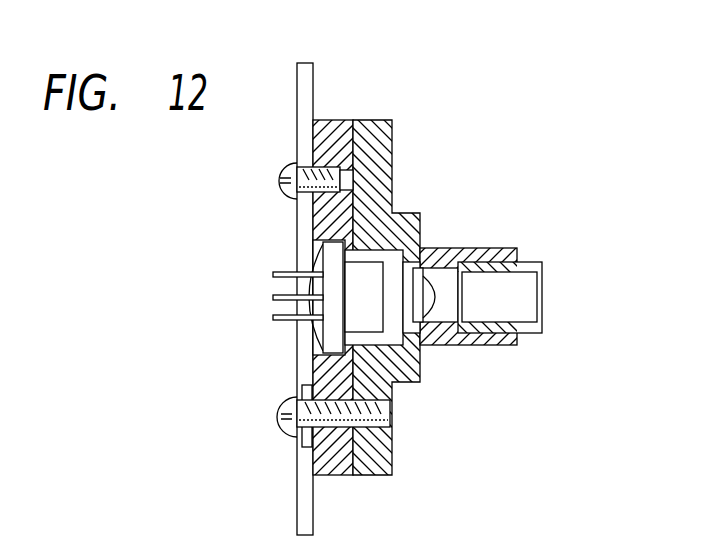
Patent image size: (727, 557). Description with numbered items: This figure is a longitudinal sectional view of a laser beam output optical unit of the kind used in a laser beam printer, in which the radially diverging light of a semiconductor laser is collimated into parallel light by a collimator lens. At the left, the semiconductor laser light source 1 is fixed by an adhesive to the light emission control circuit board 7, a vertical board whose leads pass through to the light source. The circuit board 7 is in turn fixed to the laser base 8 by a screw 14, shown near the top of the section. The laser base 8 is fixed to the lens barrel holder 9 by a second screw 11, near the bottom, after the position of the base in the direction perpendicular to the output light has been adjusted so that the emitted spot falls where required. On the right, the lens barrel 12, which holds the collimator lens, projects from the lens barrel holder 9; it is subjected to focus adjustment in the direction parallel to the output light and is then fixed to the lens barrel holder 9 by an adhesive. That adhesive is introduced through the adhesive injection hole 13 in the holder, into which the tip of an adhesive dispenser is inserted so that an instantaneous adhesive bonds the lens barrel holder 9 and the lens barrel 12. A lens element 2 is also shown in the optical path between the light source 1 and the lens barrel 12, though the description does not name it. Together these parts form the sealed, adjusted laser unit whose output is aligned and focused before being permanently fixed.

The semiconductor laser light source 1 is at (367, 292).
The lens 2 is at (421, 273).
The light emission control circuit board 7 is at (304, 68).
The laser base 8 is at (334, 122).
The lens barrel holder 9 is at (370, 122).
The screw 11 is at (345, 420).
The lens barrel 12 is at (527, 333).
The adhesive injection hole 13 is at (477, 247).
The screw 14 is at (293, 166).